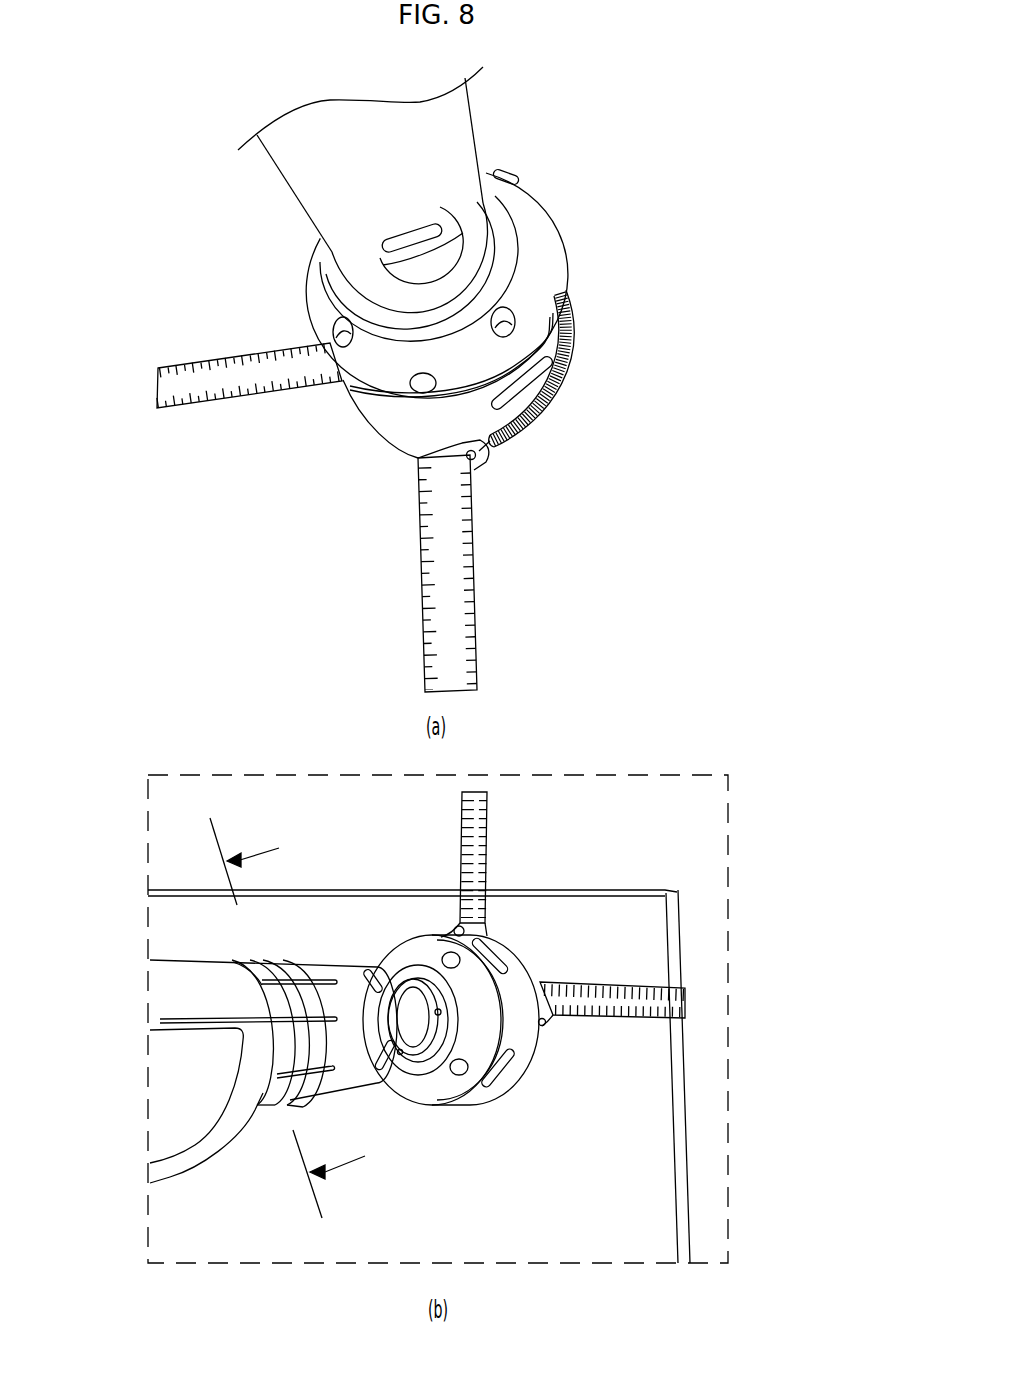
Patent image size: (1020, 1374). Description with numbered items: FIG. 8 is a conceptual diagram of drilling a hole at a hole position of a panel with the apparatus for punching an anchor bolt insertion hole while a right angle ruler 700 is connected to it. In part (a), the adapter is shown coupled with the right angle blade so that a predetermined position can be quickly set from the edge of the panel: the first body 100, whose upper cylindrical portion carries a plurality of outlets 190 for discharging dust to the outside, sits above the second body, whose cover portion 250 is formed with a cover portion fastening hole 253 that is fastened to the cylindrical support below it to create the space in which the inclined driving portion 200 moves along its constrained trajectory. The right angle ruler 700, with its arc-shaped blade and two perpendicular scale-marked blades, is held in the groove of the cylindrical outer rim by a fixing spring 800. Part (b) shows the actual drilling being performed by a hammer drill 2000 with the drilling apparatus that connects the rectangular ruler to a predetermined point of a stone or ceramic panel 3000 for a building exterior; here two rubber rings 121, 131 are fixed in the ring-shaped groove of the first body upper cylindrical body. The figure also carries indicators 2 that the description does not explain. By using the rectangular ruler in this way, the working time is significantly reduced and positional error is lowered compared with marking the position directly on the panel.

The section line 2 is at (294, 1018).
The first body 100 is at (457, 123).
The rubber ring 121 is at (287, 1105).
The rubber ring 131 is at (258, 1107).
The outlets 190 is at (487, 210).
The inclined driving portion 200 is at (465, 276).
The cover portion 250 is at (535, 240).
The cover portion fastening hole 253 is at (507, 326).
The right angle ruler 700 is at (240, 407).
The fixing spring 800 is at (523, 437).
The hammer drill 2000 is at (183, 1002).
The stone or ceramic panel 3000 is at (580, 1157).